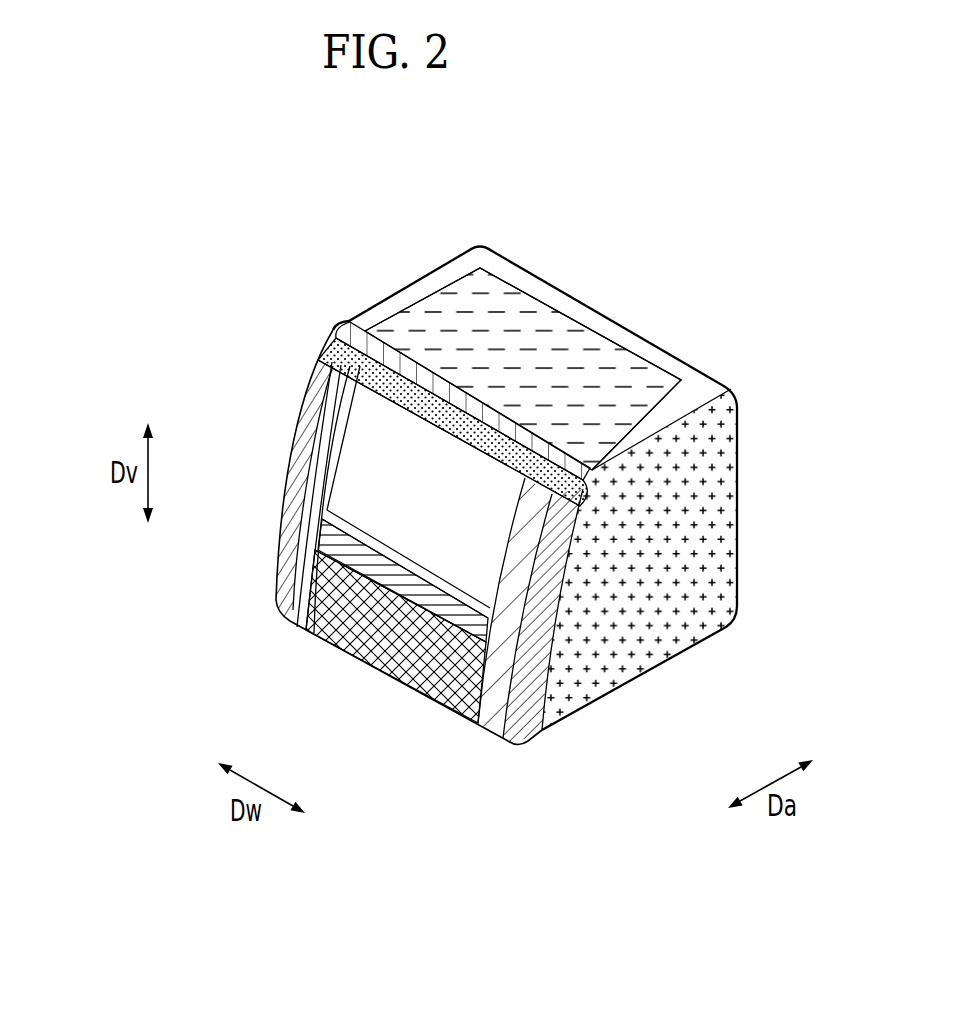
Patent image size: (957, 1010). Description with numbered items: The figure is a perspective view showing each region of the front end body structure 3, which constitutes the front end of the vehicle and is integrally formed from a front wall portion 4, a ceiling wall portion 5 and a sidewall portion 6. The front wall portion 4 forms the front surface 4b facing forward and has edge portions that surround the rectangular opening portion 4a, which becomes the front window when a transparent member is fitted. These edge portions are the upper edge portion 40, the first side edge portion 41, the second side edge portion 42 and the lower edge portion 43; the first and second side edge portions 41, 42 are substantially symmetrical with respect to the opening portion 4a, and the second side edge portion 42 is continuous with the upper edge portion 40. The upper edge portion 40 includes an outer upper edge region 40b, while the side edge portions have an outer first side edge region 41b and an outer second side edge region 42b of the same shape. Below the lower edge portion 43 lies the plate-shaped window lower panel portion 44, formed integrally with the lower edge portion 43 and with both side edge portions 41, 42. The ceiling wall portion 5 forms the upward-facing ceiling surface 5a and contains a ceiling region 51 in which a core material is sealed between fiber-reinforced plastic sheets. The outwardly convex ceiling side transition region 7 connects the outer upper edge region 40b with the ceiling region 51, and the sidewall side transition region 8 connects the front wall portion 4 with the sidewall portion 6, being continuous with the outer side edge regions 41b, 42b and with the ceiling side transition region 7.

The front end body structure 3 is at (683, 235).
The front wall portion 4 is at (58, 612).
The opening portion 4a is at (336, 475).
The front surface 4b is at (430, 600).
The ceiling wall portion 5 is at (430, 277).
The ceiling region 51 is at (562, 337).
The ceiling surface 5a is at (652, 352).
The sidewall portion 6 is at (700, 558).
The ceiling side transition region 7 is at (348, 333).
The sidewall side transition region 8 is at (276, 563).
The upper edge portion 40 is at (332, 360).
The outer upper edge region 40b is at (338, 351).
The first side edge portion 41 is at (485, 722).
The outer first side edge region 41b is at (490, 720).
The second side edge portion 42 is at (300, 592).
The outer second side edge region 42b is at (298, 608).
The lower edge portion 43 is at (380, 583).
The window lower panel portion 44 is at (395, 650).